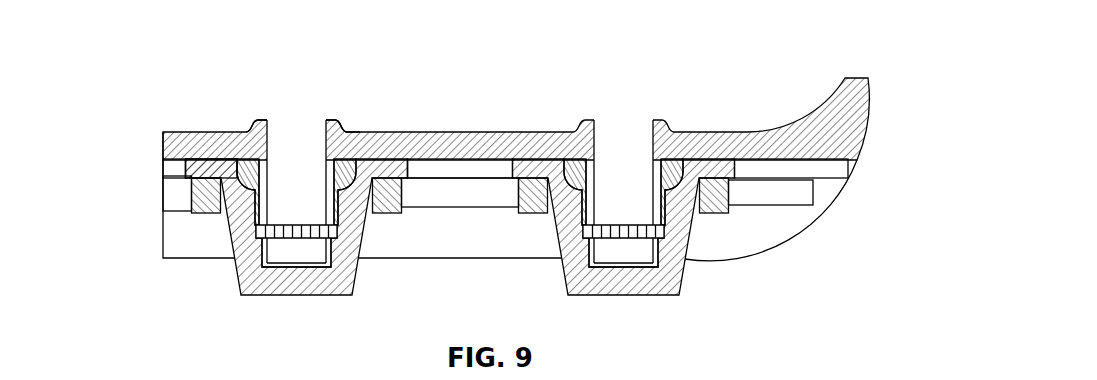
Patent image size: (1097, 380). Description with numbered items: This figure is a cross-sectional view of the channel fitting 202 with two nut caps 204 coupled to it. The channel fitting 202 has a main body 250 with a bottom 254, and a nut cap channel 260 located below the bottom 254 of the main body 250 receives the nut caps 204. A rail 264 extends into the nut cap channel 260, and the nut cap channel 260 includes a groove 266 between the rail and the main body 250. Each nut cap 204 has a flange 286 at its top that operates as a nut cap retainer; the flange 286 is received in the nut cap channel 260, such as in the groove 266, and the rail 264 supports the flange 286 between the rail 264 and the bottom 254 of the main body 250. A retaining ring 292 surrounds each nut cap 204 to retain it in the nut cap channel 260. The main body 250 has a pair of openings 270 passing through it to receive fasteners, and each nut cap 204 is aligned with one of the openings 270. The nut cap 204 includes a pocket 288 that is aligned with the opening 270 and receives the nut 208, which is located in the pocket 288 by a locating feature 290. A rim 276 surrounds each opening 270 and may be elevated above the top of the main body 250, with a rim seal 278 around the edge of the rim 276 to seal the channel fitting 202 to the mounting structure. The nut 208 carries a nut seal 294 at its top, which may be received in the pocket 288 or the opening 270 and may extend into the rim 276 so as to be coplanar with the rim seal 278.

The channel fitting 202 is at (567, 146).
The nut cap 204 is at (232, 290).
The nut 208 is at (290, 152).
The main body 250 is at (722, 136).
The bottom 254 is at (793, 160).
The nut cap channel 260 is at (775, 224).
The second rail 264 is at (445, 198).
The first groove 266 is at (488, 165).
The opening 270 is at (307, 128).
The rim 276 is at (348, 127).
The rim seal 278 is at (335, 117).
The flange 286 is at (405, 157).
The pocket 288 is at (236, 199).
The locating feature 290 is at (338, 240).
The retaining ring 292 is at (193, 200).
The nut seal 294 is at (240, 165).